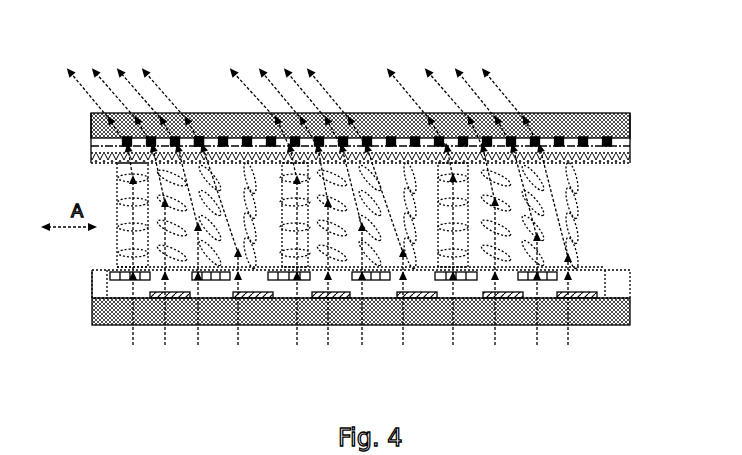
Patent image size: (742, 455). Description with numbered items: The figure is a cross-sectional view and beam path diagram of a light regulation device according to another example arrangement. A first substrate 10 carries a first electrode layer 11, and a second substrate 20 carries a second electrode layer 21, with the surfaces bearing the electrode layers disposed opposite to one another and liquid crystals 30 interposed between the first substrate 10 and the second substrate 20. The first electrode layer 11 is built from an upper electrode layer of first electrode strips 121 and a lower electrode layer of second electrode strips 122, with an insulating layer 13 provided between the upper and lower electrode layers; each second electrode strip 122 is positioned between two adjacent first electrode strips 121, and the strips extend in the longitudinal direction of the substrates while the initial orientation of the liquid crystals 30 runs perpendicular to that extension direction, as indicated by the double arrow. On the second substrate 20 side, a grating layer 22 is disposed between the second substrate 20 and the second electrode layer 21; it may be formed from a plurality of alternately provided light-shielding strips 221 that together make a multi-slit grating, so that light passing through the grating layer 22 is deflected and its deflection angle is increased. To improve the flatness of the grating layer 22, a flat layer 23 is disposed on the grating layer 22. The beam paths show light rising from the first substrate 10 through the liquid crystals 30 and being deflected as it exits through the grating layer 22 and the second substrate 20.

The first substrate 10 is at (615, 320).
The first electrode layer 11 is at (108, 292).
The insulating layer 13 is at (623, 280).
The second substrate 20 is at (613, 115).
The second electrode layer 21 is at (91, 157).
The grating layer 22 is at (145, 140).
The light-shielding strip 221 is at (200, 140).
The flat layer 23 is at (623, 143).
The liquid crystals 30 is at (583, 190).
The first electrode strip 121 is at (283, 280).
The second electrode strip 122 is at (175, 327).